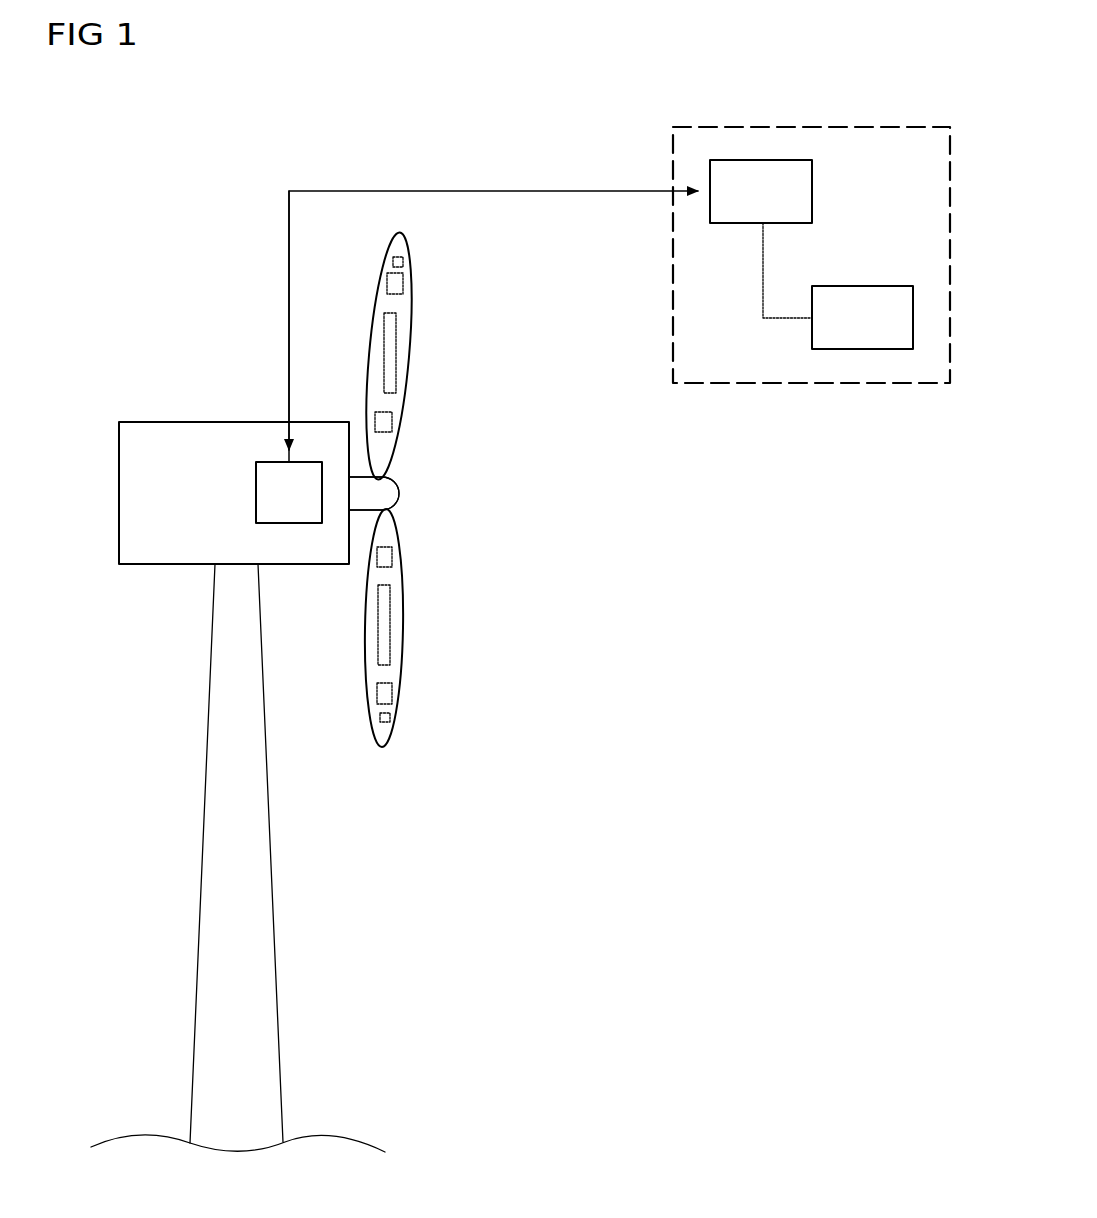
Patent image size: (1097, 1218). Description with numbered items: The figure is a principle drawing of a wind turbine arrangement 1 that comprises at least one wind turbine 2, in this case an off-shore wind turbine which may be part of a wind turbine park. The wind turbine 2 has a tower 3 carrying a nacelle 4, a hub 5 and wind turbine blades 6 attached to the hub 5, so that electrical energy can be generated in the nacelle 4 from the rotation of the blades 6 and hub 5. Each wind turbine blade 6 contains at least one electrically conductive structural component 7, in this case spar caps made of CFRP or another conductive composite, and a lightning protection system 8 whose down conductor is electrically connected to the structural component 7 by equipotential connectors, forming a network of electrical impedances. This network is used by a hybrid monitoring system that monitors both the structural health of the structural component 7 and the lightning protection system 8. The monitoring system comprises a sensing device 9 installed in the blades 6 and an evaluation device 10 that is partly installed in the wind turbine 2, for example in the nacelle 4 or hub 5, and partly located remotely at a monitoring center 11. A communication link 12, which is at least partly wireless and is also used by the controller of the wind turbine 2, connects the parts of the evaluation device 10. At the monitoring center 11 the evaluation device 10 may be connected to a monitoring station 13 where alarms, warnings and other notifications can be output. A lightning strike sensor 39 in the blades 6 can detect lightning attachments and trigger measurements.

The wind turbine arrangement 1 is at (163, 358).
The wind turbine 2 is at (300, 872).
The tower 3 is at (203, 808).
The nacelle 4 is at (119, 495).
The hub 5 is at (397, 492).
The wind turbine blade 6 is at (376, 305).
The electrically conductive structural component 7 is at (392, 351).
The lightning protection system 8 is at (403, 285).
The sensing device 9 is at (393, 423).
The evaluation device 10 is at (270, 470).
The monitoring center 11 is at (858, 127).
The communication link 12 is at (523, 190).
The monitoring station 13 is at (864, 349).
The lightning strike sensor 39 is at (403, 262).